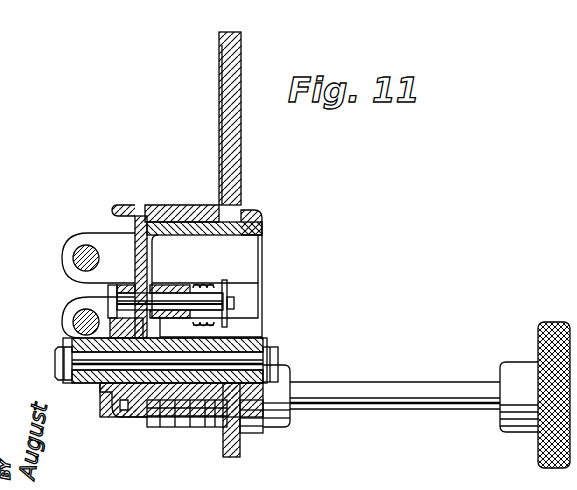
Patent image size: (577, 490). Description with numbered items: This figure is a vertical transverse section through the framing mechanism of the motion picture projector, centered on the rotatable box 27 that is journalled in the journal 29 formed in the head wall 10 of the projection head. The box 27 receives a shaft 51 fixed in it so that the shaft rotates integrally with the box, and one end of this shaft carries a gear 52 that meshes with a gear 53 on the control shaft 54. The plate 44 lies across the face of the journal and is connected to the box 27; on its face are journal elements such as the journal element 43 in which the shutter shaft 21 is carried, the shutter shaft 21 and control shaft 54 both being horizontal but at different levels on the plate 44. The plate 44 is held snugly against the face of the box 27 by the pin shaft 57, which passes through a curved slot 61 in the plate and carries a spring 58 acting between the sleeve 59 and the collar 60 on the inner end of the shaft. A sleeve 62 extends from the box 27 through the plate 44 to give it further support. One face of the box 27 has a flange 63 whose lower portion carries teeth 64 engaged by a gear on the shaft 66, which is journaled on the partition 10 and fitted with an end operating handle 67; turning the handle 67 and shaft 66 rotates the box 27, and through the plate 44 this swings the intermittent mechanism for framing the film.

The head wall 10 is at (228, 145).
The box 27 is at (209, 226).
The journal 29 is at (178, 216).
The plate 44 is at (120, 206).
The flange 63 is at (252, 213).
The shutter shaft 21 is at (88, 252).
The journal element 43 is at (64, 258).
The curved slot 61 is at (128, 286).
The pin shaft 57 is at (165, 300).
The sleeve 59 is at (192, 292).
The spring 58 is at (220, 282).
The collar 60 is at (234, 303).
The shaft 51 is at (218, 358).
The control shaft 54 is at (80, 315).
The gear 53 is at (73, 324).
The gear 52 is at (78, 383).
The sleeve 62 is at (110, 394).
The teeth 64 is at (250, 434).
The shaft 66 is at (372, 382).
The operating handle 67 is at (540, 447).